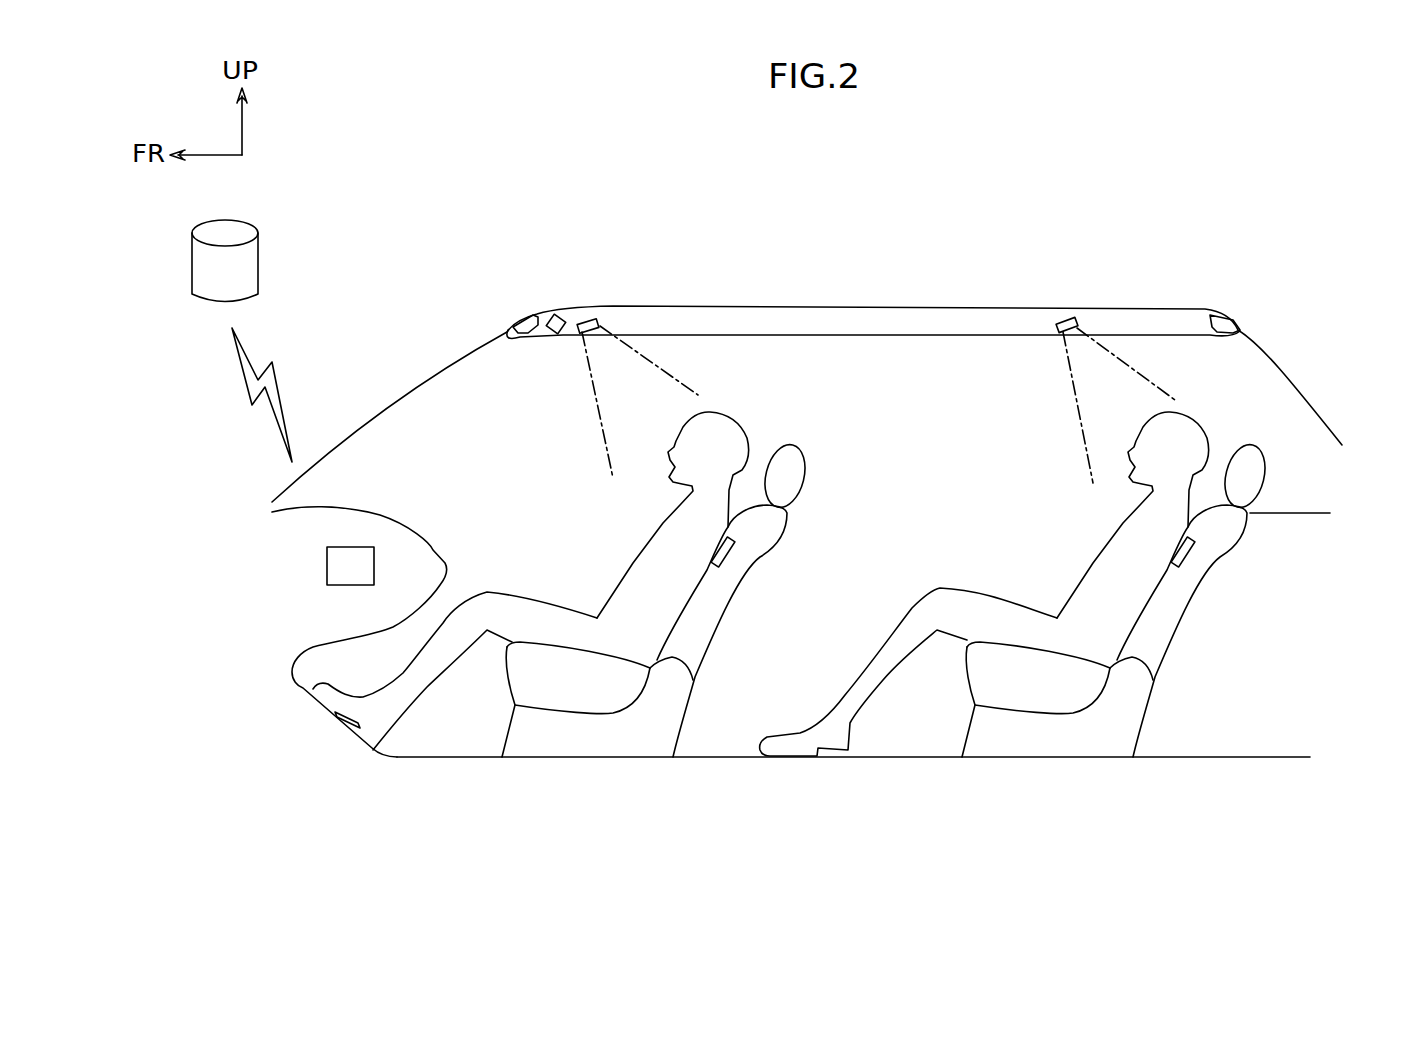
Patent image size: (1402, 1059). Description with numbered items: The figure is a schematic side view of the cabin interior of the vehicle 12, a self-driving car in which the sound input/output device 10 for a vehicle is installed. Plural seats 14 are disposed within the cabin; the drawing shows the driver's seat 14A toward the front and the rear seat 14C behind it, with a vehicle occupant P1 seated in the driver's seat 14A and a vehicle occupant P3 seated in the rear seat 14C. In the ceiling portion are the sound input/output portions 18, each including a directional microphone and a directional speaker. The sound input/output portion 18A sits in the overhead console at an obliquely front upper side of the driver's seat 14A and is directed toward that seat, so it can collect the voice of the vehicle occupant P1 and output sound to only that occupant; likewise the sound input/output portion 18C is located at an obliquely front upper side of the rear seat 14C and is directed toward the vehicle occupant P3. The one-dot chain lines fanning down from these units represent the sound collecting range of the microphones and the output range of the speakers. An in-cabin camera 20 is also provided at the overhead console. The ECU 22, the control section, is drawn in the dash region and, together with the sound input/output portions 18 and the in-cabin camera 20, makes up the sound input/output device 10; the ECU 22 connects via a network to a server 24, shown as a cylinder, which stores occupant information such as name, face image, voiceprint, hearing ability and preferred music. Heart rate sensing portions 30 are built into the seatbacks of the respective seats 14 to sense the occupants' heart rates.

The sound input/output device for a vehicle 10 is at (431, 324).
The vehicle 12 is at (403, 178).
The seats 14 is at (951, 584).
The driver's seat 14A is at (803, 450).
The rear seat 14C is at (1267, 458).
The sound input/output portions 18 is at (880, 355).
The sound input/output portion 18A is at (598, 320).
The sound input/output portion 18C is at (1065, 310).
The in-cabin camera 20 is at (563, 313).
The ECU 22 is at (350, 547).
The server 24 is at (258, 258).
The heart rate sensing portions 30 is at (732, 553).
The vehicle occupant P1 is at (645, 542).
The vehicle occupant P3 is at (1090, 553).